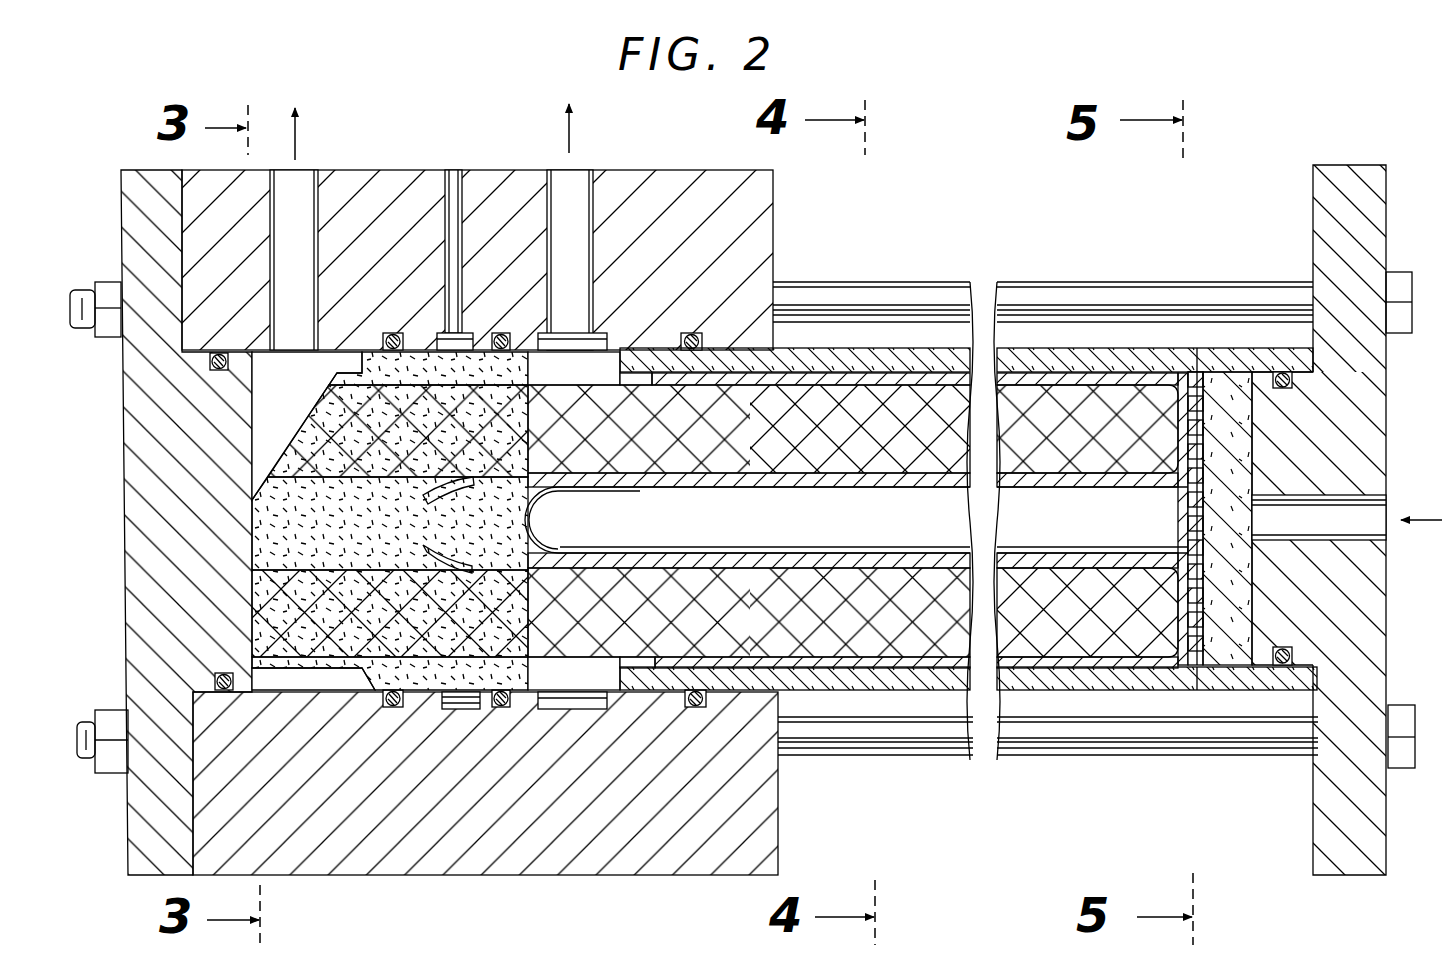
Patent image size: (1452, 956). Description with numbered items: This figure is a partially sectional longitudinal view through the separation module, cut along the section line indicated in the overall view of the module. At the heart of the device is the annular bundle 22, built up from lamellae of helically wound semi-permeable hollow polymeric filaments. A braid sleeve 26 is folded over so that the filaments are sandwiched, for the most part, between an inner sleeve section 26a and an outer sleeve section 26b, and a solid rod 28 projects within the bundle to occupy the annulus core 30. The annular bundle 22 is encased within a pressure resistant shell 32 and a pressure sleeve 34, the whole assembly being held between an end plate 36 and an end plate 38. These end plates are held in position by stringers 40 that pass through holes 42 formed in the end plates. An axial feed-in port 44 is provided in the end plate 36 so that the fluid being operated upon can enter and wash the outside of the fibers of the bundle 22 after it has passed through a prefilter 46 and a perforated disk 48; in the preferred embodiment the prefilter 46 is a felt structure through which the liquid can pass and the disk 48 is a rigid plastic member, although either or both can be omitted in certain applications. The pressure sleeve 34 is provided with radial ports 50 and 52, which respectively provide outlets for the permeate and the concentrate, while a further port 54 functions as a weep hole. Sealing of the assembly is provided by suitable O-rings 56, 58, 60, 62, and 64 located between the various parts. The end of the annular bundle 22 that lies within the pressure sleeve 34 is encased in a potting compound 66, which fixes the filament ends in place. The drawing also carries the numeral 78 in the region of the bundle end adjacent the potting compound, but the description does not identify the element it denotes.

The annular bundle 22 is at (837, 392).
The braid sleeve 26 is at (1197, 372).
The inner sleeve section 26a is at (697, 482).
The outer sleeve section 26b is at (898, 380).
The solid rod 28 is at (932, 527).
The annulus core 30 is at (520, 553).
The pressure resistant shell 32 is at (1133, 350).
The pressure sleeve 34 is at (672, 176).
The end plate 36 is at (1378, 405).
The end plate 38 is at (135, 468).
The stringers 40 is at (1053, 288).
The holes 42 is at (1303, 282).
The axial feed-in port 44 is at (1327, 532).
The prefilter 46 is at (1234, 572).
The perforated disk 48 is at (1197, 668).
The radial port 50 is at (311, 282).
The radial port 52 is at (589, 274).
The port 54 is at (453, 170).
The O-ring 56 is at (222, 372).
The O-ring 58 is at (393, 333).
The O-ring 60 is at (500, 333).
The O-ring 62 is at (692, 333).
The O-ring 64 is at (1286, 390).
The potting compound 66 is at (407, 618).
The wedge block 78 is at (310, 428).